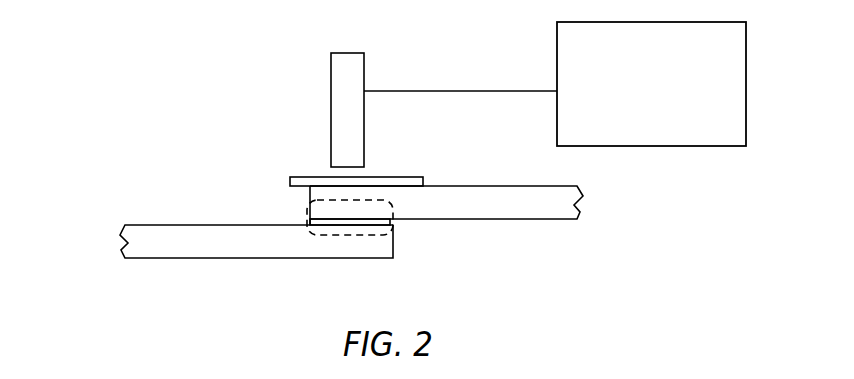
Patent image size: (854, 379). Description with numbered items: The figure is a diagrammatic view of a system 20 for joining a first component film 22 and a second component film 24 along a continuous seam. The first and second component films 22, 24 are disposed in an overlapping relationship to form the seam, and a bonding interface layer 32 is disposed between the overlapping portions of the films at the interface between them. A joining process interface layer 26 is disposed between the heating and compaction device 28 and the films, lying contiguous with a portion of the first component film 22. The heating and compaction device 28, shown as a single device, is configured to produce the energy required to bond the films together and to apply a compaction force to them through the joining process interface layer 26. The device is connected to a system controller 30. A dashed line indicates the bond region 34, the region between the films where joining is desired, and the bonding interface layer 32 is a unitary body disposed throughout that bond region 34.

The system 20 is at (139, 39).
The first component film 22 is at (577, 207).
The second component film 24 is at (124, 237).
The joining process interface layer 26 is at (290, 181).
The heating and compaction device 28 is at (320, 99).
The system controller 30 is at (666, 133).
The bonding interface layer 32 is at (392, 223).
The bond region 34 is at (330, 236).